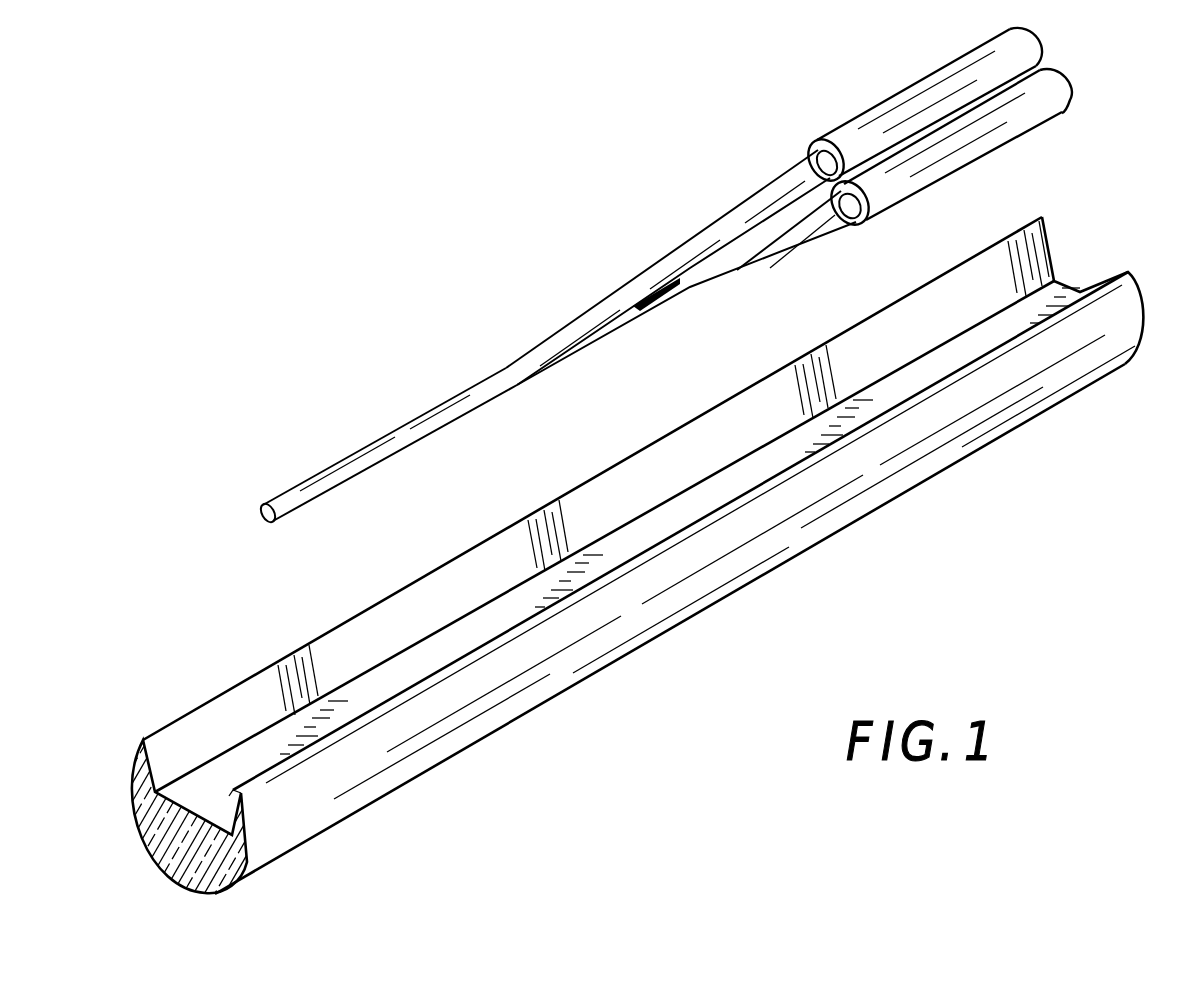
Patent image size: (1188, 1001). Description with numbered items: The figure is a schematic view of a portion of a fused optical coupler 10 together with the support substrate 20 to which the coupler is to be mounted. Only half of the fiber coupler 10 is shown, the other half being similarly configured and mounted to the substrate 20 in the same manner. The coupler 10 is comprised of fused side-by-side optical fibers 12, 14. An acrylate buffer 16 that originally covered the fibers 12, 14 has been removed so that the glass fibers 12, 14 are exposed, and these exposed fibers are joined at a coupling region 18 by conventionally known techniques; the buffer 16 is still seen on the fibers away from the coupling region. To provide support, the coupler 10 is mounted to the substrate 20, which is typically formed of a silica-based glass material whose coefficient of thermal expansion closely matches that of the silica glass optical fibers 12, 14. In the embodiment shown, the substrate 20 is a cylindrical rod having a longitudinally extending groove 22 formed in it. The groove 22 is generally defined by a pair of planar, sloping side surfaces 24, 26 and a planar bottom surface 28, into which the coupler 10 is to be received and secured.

The fused optical coupler 10 is at (591, 196).
The optical fiber 12 is at (748, 213).
The optical fiber 14 is at (763, 250).
The acrylate buffer 16 is at (888, 128).
The coupling region 18 is at (377, 452).
The support substrate 20 is at (910, 518).
The groove 22 is at (1084, 264).
The sloping side surface 24 is at (250, 712).
The sloping side surface 26 is at (220, 812).
The bottom surface 28 is at (370, 687).